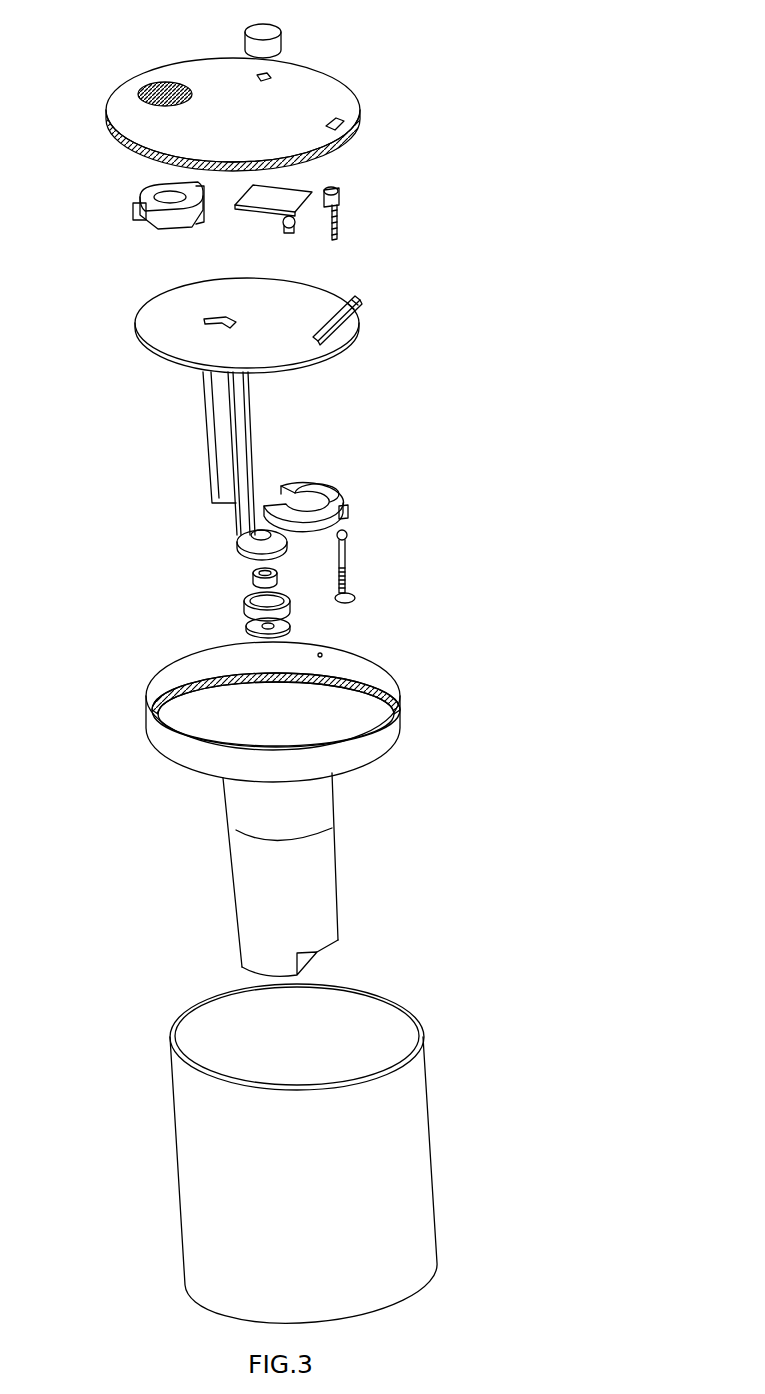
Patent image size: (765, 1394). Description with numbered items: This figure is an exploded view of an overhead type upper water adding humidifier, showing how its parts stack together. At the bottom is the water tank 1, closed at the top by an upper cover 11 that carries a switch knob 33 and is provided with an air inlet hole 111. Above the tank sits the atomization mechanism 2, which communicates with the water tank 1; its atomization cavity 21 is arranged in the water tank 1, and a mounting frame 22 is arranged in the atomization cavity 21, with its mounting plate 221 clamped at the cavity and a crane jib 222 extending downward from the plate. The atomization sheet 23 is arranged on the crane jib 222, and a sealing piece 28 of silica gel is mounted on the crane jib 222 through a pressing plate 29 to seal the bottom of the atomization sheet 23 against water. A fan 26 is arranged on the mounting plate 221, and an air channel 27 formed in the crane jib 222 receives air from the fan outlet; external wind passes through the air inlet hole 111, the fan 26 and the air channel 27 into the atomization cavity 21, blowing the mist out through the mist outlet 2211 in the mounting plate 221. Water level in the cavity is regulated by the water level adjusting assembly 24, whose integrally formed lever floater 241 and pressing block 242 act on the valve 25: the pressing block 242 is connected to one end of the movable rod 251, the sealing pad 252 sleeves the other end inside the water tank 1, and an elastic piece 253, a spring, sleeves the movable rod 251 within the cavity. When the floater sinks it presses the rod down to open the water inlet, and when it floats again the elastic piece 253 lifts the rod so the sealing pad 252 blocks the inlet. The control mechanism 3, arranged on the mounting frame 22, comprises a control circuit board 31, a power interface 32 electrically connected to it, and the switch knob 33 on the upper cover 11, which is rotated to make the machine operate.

The water tank 1 is at (430, 1148).
The atomization mechanism 2 is at (448, 602).
The atomization cavity 21 is at (335, 847).
The mounting frame 22 is at (292, 419).
The mounting plate 221 is at (342, 348).
The mist outlet 2211 is at (343, 317).
The crane jib 222 is at (247, 417).
The atomization sheet 23 is at (252, 577).
The water level adjusting assembly 24 is at (353, 508).
The lever floater 241 is at (340, 490).
The pressing block 242 is at (343, 515).
The valve 25 is at (390, 594).
The movable rod 251 is at (343, 537).
The sealing pad 252 is at (350, 603).
The elastic piece 253 is at (350, 580).
The fan 26 is at (157, 223).
The air channel 27 is at (208, 413).
The sealing piece 28 is at (247, 610).
The pressing plate 29 is at (243, 630).
The control mechanism 3 is at (363, 191).
The control circuit board 31 is at (290, 188).
The power interface 32 is at (293, 227).
The switch knob 33 is at (282, 35).
The upper cover 11 is at (342, 80).
The air inlet hole 111 is at (153, 85).